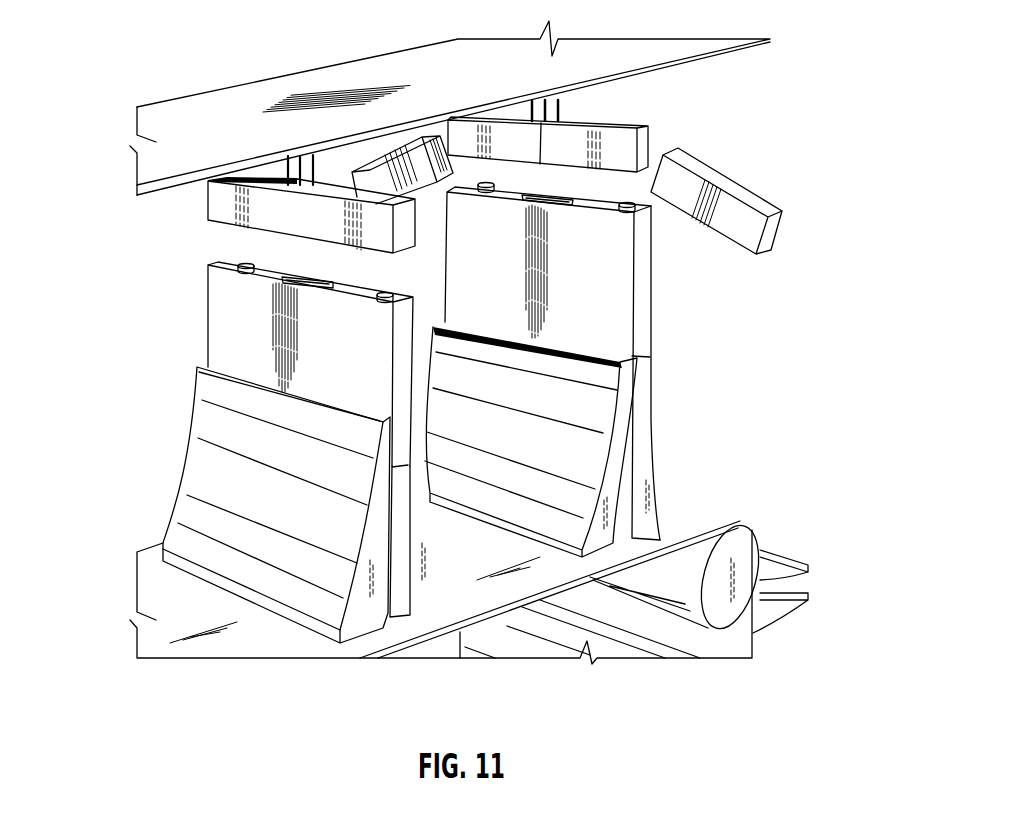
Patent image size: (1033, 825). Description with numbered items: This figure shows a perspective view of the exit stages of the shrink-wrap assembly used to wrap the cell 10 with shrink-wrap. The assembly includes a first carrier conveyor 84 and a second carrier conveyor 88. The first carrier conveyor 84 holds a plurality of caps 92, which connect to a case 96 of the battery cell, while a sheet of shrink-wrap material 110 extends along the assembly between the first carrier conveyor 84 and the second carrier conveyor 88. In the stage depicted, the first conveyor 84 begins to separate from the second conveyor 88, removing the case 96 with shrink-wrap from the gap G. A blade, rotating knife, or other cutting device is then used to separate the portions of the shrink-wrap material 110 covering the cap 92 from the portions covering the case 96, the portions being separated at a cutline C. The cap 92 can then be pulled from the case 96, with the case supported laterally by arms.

The first carrier conveyor 84 is at (636, 70).
The cap 92 is at (622, 143).
The case 96 is at (583, 207).
The cell 10 is at (600, 290).
The sheet of shrink-wrap material 110 is at (605, 327).
The second carrier conveyor 88 is at (578, 583).
The cutline C is at (263, 270).
The gap G is at (400, 604).